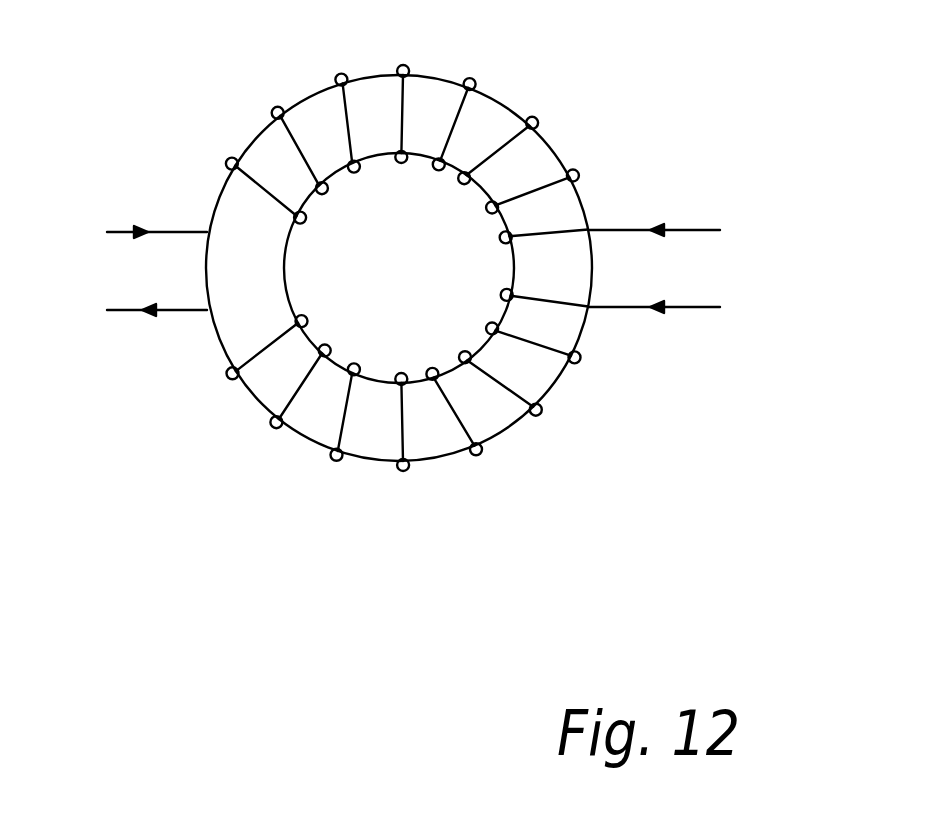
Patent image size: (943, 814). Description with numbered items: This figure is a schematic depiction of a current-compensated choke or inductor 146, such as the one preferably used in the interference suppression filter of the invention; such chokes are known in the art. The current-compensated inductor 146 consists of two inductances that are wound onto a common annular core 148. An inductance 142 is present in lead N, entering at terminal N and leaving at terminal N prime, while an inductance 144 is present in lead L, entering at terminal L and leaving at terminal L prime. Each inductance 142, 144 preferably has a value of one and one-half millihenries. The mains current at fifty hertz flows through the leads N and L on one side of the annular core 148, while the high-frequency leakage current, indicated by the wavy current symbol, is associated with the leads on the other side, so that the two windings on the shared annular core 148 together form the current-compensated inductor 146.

The inductance 142 is at (341, 74).
The inductance 144 is at (338, 464).
The current-compensated inductor 146 is at (246, 99).
The annular core 148 is at (440, 98).